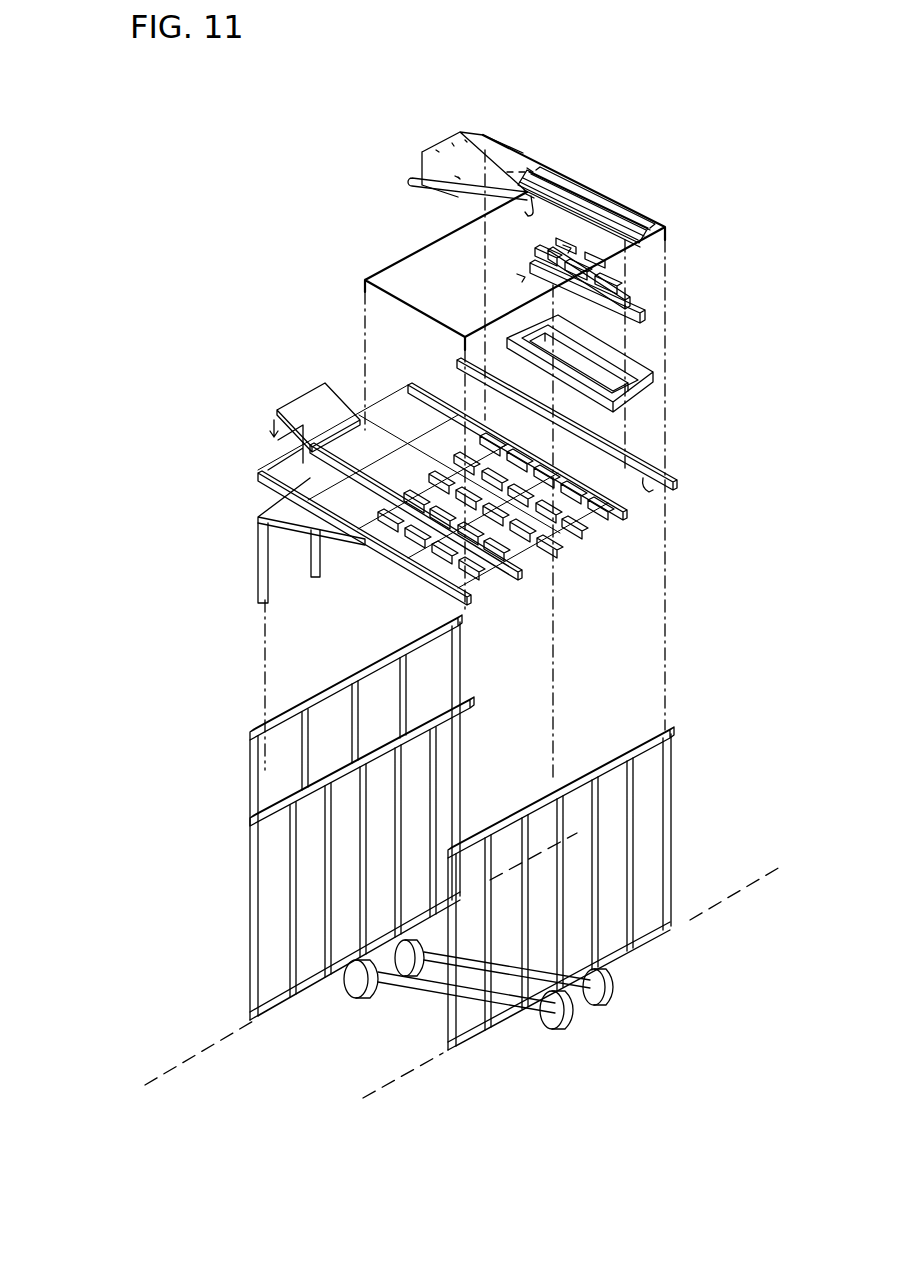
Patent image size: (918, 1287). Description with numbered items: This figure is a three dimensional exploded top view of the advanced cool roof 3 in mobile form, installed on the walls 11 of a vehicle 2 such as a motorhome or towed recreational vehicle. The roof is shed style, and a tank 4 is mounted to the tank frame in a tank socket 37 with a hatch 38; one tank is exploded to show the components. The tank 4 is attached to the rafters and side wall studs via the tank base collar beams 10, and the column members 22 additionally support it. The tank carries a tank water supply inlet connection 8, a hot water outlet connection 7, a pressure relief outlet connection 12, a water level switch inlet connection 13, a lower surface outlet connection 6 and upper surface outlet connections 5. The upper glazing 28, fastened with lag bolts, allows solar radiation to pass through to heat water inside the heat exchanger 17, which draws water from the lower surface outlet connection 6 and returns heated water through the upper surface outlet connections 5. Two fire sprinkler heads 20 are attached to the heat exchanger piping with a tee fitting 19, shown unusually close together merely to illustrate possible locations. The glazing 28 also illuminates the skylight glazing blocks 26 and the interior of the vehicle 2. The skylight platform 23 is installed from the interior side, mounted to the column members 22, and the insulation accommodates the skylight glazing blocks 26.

The vehicle 2 is at (587, 1037).
The advanced cool roof 3 is at (160, 376).
The tank 4 is at (533, 172).
The upper surface outlet connection 5 is at (532, 182).
The lower surface outlet connection 6 is at (458, 177).
The hot water outlet connection 7 is at (428, 163).
The tank water supply inlet connection 8 is at (438, 152).
The tank base collar beam 10 is at (413, 180).
The wall 11 is at (475, 717).
The pressure relief outlet connection 12 is at (466, 140).
The water level switch inlet connection 13 is at (453, 145).
The heat exchanger 17 is at (637, 190).
The tee fitting 19 is at (590, 180).
The fire sprinkler head 20 is at (600, 182).
The column member 22 is at (622, 503).
The skylight platform 23 is at (614, 403).
The skylight glazing block 26 is at (633, 292).
The upper glazing 28 is at (413, 308).
The tank socket 37 is at (278, 458).
The hatch 38 is at (315, 417).